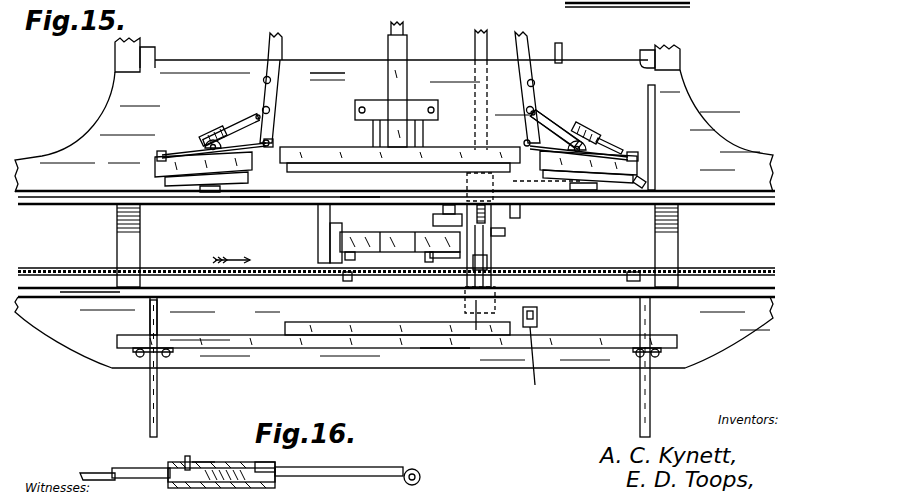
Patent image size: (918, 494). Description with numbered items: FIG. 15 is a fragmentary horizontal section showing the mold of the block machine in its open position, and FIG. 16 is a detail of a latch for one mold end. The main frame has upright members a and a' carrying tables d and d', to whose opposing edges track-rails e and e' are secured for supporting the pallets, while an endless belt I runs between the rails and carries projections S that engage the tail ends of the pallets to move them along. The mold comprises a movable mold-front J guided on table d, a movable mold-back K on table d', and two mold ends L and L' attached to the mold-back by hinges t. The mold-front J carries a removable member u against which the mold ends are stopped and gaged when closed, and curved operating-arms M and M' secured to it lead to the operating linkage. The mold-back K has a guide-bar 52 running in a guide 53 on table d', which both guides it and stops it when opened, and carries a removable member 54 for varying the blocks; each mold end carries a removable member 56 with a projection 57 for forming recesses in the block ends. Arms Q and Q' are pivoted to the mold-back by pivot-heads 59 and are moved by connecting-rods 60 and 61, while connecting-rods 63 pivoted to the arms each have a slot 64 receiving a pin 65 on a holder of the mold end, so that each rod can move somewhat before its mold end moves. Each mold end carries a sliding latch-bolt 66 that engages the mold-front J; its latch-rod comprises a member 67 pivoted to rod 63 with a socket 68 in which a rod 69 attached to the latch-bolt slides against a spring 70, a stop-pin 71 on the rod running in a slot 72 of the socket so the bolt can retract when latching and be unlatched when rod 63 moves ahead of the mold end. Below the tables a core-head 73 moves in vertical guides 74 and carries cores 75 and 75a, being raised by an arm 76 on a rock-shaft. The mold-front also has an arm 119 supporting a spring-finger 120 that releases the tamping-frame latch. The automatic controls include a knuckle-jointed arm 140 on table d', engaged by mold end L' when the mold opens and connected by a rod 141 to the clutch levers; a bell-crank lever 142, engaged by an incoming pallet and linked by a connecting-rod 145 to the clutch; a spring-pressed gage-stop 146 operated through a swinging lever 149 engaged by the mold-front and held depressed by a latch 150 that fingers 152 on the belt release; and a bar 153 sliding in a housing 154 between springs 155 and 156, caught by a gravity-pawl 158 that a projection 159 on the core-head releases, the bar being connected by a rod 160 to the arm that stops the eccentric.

In FIG. 15, the guide-bar 52 is at (398, 50).
In FIG. 15, the guide 53 is at (375, 105).
In FIG. 15, the removable member 54 is at (350, 171).
In FIG. 15, the removable member 56 is at (242, 179).
In FIG. 15, the projection 57 is at (208, 194).
In FIG. 15, the pivot-heads 59 is at (273, 138).
In FIG. 15, the connecting-rod 60 is at (270, 43).
In FIG. 15, the connecting-rod 61 is at (524, 45).
In FIG. 15, the connecting-rod 63 is at (238, 124).
In FIG. 15, the slot 64 is at (210, 128).
In FIG. 15, the rod 65 is at (190, 150).
In FIG. 15, the latch-bolt 66 is at (640, 157).
In FIG. 16, the latch-bolt 66 is at (95, 472).
In FIG. 15, the latch-rod member 67 is at (556, 130).
In FIG. 16, the latch-rod member 67 is at (336, 467).
In FIG. 15, the socket 68 is at (590, 128).
In FIG. 16, the socket 68 is at (228, 462).
In FIG. 15, the rod 69 is at (606, 150).
In FIG. 16, the rod 69 is at (140, 468).
In FIG. 16, the spring 70 is at (265, 456).
In FIG. 16, the stop-pin 71 is at (186, 456).
In FIG. 16, the slot 72 is at (200, 462).
In FIG. 15, the core-head 73 is at (385, 238).
In FIG. 15, the vertical guide 74 is at (318, 242).
In FIG. 15, the core 75 is at (352, 196).
In FIG. 15, the core 75a is at (435, 258).
In FIG. 15, the arm 76 is at (392, 28).
In FIG. 15, the arm 119 is at (145, 356).
In FIG. 15, the spring-finger 120 is at (150, 323).
In FIG. 15, the knuckle-jointed arm 140 is at (636, 188).
In FIG. 15, the rod 141 is at (656, 112).
In FIG. 15, the bell-crank lever 142 is at (521, 210).
In FIG. 15, the connecting-rod 145 is at (563, 53).
In FIG. 15, the gage-stop 146 is at (538, 316).
In FIG. 15, the swinging lever 149 is at (539, 366).
In FIG. 15, the latch 150 is at (490, 300).
In FIG. 15, the fingers 152 is at (345, 281).
In FIG. 15, the bar 153 is at (505, 232).
In FIG. 15, the housing 154 is at (432, 348).
In FIG. 15, the spring 155 is at (492, 222).
In FIG. 15, the spring 156 is at (477, 300).
In FIG. 15, the gravity-pawl 158 is at (450, 214).
In FIG. 15, the projection 159 is at (443, 210).
In FIG. 15, the rod 160 is at (481, 30).
In FIG. 15, the upright main member a is at (324, 144).
In FIG. 15, the upright main member a' is at (683, 57).
In FIG. 15, the table d is at (426, 325).
In FIG. 15, the table d' is at (327, 52).
In FIG. 15, the track-rail e is at (85, 329).
In FIG. 15, the track-rail e' is at (250, 213).
In FIG. 15, the endless belt I is at (195, 266).
In FIG. 15, the mold-front J is at (245, 336).
In FIG. 15, the mold-back K is at (333, 150).
In FIG. 15, the mold end L is at (185, 166).
In FIG. 15, the mold end L' is at (612, 170).
In FIG. 15, the operating-arm M is at (145, 233).
In FIG. 15, the operating-arm M' is at (626, 233).
In FIG. 15, the arm Q is at (277, 101).
In FIG. 15, the arm Q' is at (518, 101).
In FIG. 15, the projections S is at (33, 266).
In FIG. 15, the hinge t is at (272, 142).
In FIG. 15, the removable member u is at (340, 322).